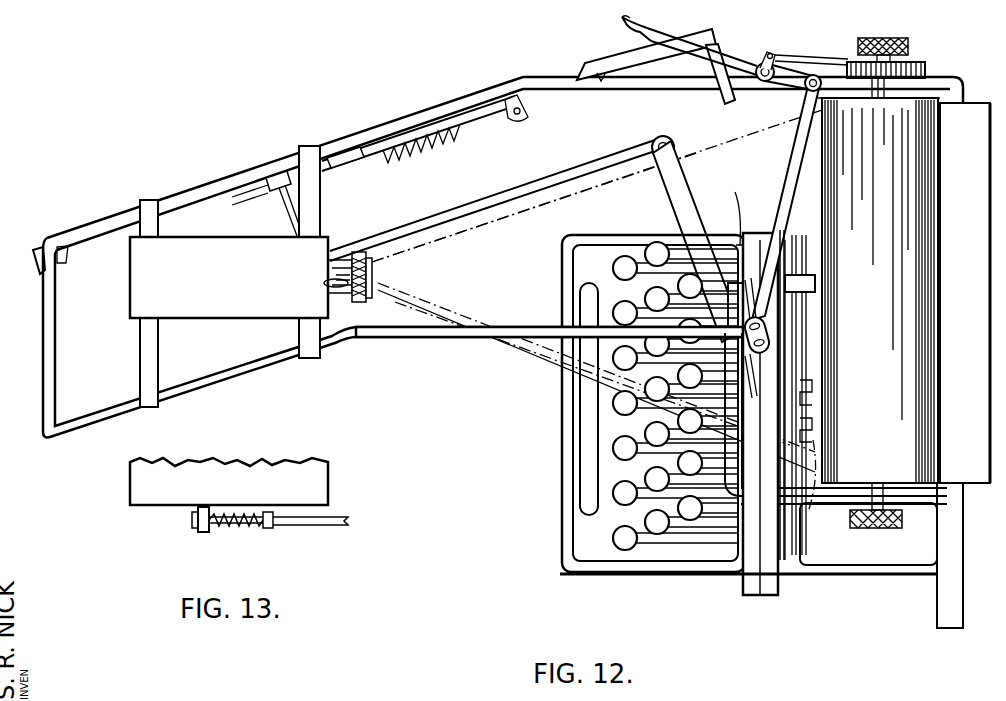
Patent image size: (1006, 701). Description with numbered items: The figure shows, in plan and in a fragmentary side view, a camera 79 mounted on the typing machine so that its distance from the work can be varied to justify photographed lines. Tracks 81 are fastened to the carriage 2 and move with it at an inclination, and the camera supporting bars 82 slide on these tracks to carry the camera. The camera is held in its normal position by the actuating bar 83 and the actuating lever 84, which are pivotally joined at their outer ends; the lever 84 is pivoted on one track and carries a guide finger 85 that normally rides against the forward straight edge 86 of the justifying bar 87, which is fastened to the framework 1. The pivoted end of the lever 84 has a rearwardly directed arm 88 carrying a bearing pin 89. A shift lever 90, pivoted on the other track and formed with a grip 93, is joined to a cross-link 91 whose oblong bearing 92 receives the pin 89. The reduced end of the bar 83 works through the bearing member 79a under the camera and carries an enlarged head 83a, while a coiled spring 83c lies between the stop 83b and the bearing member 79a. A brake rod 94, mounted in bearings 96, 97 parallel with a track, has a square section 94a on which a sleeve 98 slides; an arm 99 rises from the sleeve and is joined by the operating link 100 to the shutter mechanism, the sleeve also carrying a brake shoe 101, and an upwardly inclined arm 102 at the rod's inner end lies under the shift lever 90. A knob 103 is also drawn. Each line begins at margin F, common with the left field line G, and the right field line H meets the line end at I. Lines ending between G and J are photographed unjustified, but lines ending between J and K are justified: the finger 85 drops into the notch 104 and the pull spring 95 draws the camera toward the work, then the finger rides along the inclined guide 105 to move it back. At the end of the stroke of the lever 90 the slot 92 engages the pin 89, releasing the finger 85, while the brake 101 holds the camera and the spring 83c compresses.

In FIG. 12, the framework 1 is at (876, 577).
In FIG. 12, the carriage 2 is at (814, 230).
In FIG. 12, the camera 79 is at (255, 241).
In FIG. 13, the camera 79 is at (329, 480).
In FIG. 13, the bearing member 79a is at (206, 537).
In FIG. 12, the tracks 81 is at (181, 200).
In FIG. 12, the camera supporting bars 82 is at (322, 212).
In FIG. 12, the actuating bar 83 is at (563, 178).
In FIG. 13, the actuating bar 83 is at (346, 529).
In FIG. 13, the enlarged head 83a is at (192, 519).
In FIG. 13, the stop 83b is at (272, 530).
In FIG. 13, the coiled spring 83c is at (252, 526).
In FIG. 12, the actuating lever 84 is at (690, 215).
In FIG. 12, the guide finger 85 is at (740, 282).
In FIG. 12, the forward straight edge 86 is at (742, 580).
In FIG. 12, the justifying bar 87 is at (774, 596).
In FIG. 12, the rearwardly directed arm 88 is at (748, 370).
In FIG. 12, the bearing pin 89 is at (755, 350).
In FIG. 12, the shift lever 90 is at (757, 65).
In FIG. 12, the cross-link 91 is at (790, 160).
In FIG. 12, the oblong bearing 92 is at (755, 290).
In FIG. 12, the grip 93 is at (640, 44).
In FIG. 12, the brake rod 94 is at (440, 120).
In FIG. 12, the square section 94a is at (343, 152).
In FIG. 12, the pull spring 95 is at (422, 156).
In FIG. 12, the bearing 96 is at (584, 72).
In FIG. 12, the bearing 97 is at (40, 237).
In FIG. 12, the sleeve 98 is at (322, 180).
In FIG. 12, the arm 99 is at (300, 167).
In FIG. 12, the operating link 100 is at (290, 216).
In FIG. 12, the brake shoe 101 is at (275, 166).
In FIG. 12, the upwardly inclined arm 102 is at (722, 100).
In FIG. 12, the knob 103 is at (849, 58).
In FIG. 12, the notch 104 is at (747, 245).
In FIG. 12, the forwardly inclined guide 105 is at (736, 190).
In FIG. 12, the left margin point F is at (800, 118).
In FIG. 12, the left field line G is at (716, 144).
In FIG. 12, the right field line H is at (533, 353).
In FIG. 12, the right margin point I is at (812, 485).
In FIG. 12, the justification threshold line J is at (505, 318).
In FIG. 12, the justification limit line K is at (473, 347).